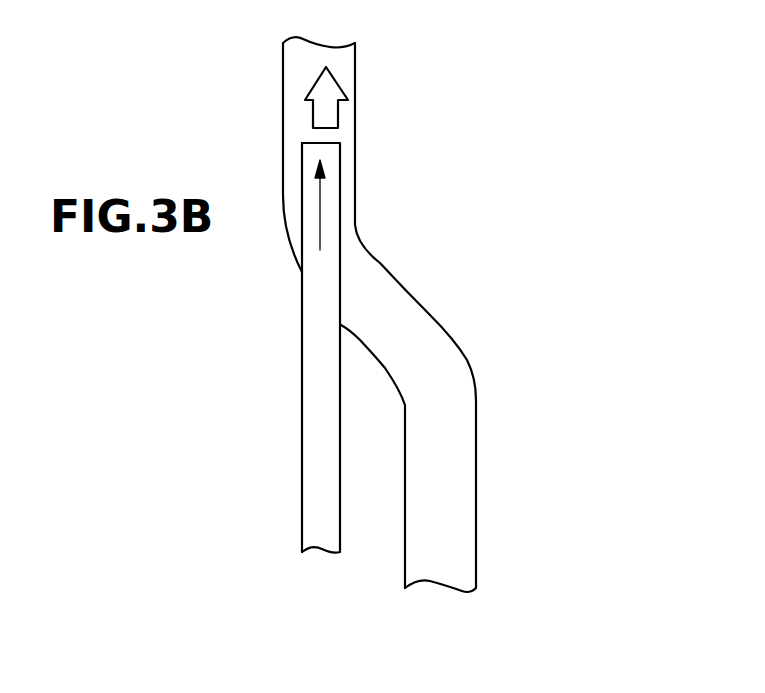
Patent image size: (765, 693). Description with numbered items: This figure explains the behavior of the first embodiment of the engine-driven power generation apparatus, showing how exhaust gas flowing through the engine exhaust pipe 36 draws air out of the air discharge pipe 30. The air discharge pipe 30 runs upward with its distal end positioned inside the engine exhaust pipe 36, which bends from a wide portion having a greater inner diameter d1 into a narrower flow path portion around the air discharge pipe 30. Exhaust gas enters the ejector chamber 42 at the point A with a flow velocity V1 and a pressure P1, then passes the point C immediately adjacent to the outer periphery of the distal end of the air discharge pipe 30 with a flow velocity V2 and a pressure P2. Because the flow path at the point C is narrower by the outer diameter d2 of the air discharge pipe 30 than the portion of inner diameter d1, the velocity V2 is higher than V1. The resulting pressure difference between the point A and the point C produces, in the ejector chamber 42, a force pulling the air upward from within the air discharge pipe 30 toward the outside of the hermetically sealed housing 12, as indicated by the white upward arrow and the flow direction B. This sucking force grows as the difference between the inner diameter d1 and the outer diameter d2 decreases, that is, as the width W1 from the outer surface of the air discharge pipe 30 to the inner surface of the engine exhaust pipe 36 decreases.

The hermetically sealed housing 12 is at (323, 219).
The air discharge pipe 30 is at (300, 385).
The engine exhaust pipe 36 is at (502, 510).
The ejector chamber 42 is at (398, 263).
The flow direction B is at (298, 119).
The point C is at (350, 154).
The point A is at (393, 317).
The width from air discharge pipe to engine exhaust pipe W1 is at (326, 191).
The inner diameter of engine exhaust pipe d1 is at (405, 462).
The outer diameter of air discharge pipe d2 is at (372, 447).